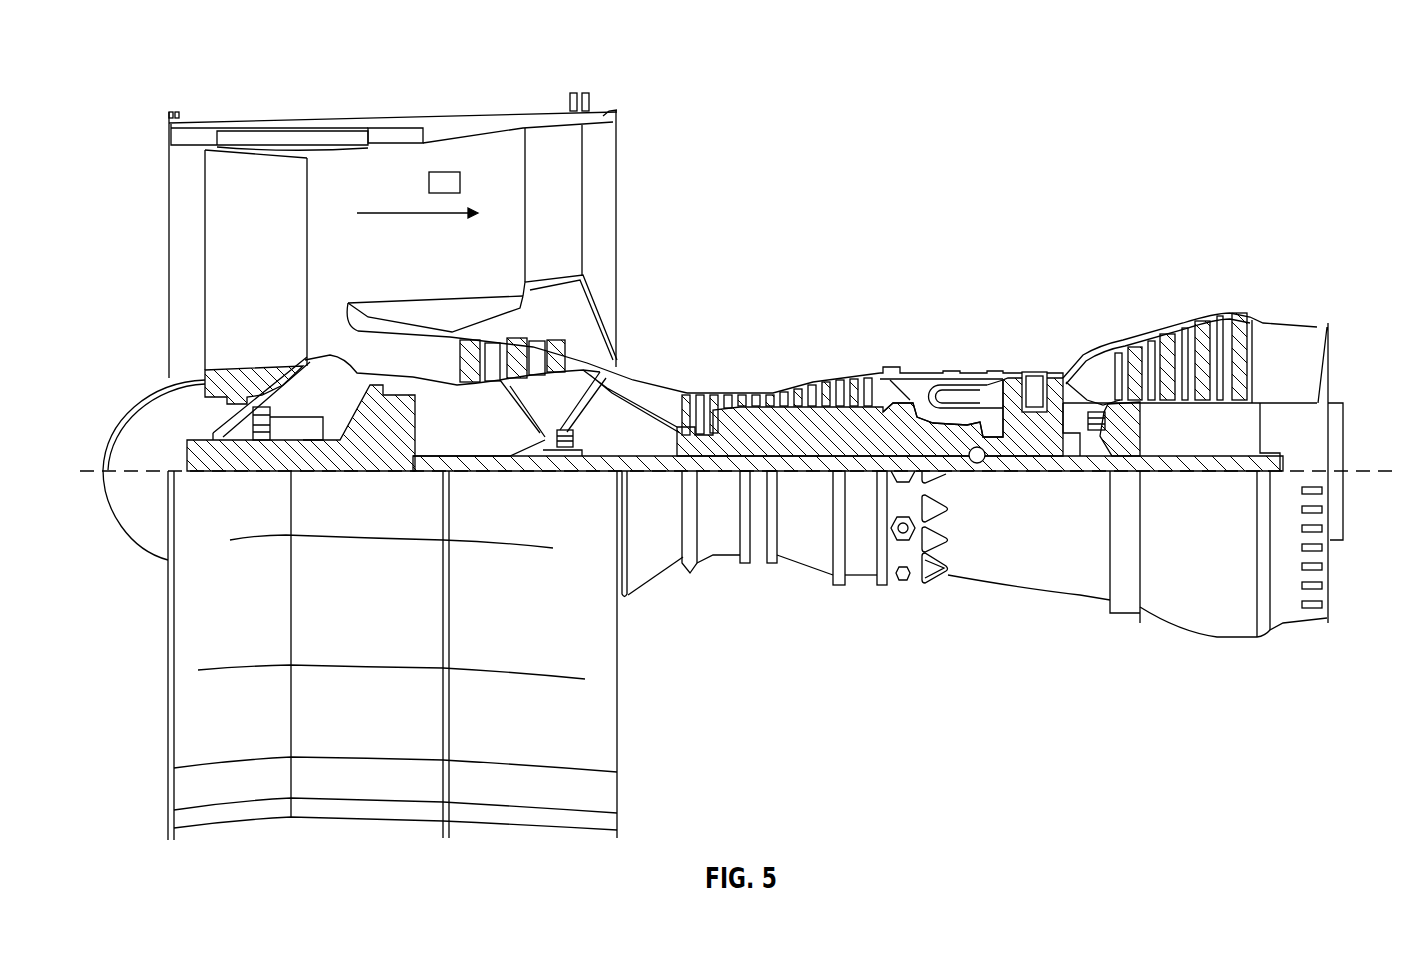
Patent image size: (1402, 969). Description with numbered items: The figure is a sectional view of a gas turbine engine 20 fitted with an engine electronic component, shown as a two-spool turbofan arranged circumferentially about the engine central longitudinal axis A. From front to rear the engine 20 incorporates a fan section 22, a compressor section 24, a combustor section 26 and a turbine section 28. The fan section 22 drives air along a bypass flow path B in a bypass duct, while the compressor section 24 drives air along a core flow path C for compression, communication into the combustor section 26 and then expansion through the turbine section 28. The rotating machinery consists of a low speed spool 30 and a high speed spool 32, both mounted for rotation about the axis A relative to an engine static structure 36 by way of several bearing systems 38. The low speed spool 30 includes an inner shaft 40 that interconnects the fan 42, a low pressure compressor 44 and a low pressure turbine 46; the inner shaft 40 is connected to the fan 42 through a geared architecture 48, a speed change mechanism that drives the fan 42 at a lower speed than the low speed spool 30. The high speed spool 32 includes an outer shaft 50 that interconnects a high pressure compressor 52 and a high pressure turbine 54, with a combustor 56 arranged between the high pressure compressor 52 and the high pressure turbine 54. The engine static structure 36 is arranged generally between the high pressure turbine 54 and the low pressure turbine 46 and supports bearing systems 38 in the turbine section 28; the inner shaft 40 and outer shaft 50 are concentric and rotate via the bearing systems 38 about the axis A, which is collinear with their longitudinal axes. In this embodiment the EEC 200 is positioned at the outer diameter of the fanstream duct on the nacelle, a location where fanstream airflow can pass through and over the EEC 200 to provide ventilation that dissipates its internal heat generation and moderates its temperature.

The gas turbine engine 20 is at (1157, 160).
The fan section 22 is at (352, 124).
The compressor section 24 is at (797, 334).
The combustor section 26 is at (955, 334).
The turbine section 28 is at (1139, 280).
The low speed spool 30 is at (827, 473).
The high speed spool 32 is at (878, 402).
The engine static structure 36 is at (863, 585).
The bearing systems 38 is at (267, 433).
The inner shaft 40 is at (630, 463).
The fan 42 is at (278, 240).
The low pressure compressor 44 is at (538, 354).
The low pressure turbine 46 is at (1190, 337).
The geared architecture 48 is at (397, 440).
The outer shaft 50 is at (985, 458).
The high pressure compressor 52 is at (787, 440).
The high pressure turbine 54 is at (1035, 371).
The combustor 56 is at (960, 390).
The EEC 200 is at (445, 172).
The engine central longitudinal axis A is at (1352, 467).
The bypass flow path B is at (418, 212).
The core flow path C is at (355, 339).